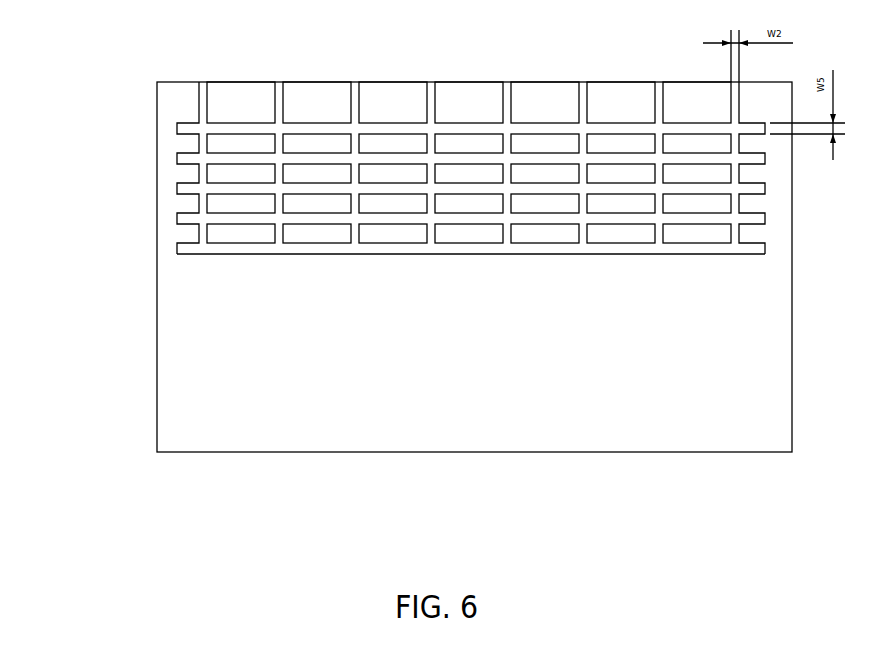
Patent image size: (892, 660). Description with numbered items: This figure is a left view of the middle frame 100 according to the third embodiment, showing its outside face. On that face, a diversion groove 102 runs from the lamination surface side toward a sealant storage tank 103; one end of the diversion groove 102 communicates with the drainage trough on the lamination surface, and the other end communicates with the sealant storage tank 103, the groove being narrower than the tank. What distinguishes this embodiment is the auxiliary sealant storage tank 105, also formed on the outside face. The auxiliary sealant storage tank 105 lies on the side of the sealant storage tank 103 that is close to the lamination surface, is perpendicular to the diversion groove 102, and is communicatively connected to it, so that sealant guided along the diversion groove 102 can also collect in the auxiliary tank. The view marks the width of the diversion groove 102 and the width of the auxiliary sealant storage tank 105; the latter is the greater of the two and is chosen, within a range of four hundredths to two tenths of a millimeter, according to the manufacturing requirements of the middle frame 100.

The middle frame 100 is at (106, 52).
The diversion groove 102 is at (201, 104).
The sealant storage tank 103 is at (212, 253).
The auxiliary sealant storage tank 105 is at (189, 162).